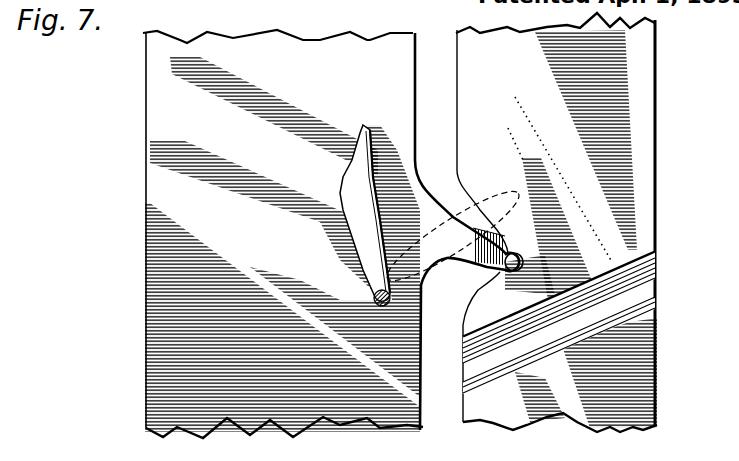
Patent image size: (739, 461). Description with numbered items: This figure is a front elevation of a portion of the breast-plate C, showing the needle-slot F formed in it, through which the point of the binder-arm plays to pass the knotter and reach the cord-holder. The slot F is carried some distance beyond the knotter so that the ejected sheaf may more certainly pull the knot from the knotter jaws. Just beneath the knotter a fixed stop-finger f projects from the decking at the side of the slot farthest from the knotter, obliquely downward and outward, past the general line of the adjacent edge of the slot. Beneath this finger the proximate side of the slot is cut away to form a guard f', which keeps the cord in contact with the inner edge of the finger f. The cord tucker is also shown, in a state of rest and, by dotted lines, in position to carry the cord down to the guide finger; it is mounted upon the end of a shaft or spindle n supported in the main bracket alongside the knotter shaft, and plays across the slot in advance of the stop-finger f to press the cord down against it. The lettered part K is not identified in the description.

The breast-plate C is at (283, 234).
The knife blade K is at (352, 213).
The shaft or spindle n is at (373, 302).
The slot F is at (467, 230).
The stop-finger f is at (479, 246).
The guard f' is at (508, 247).